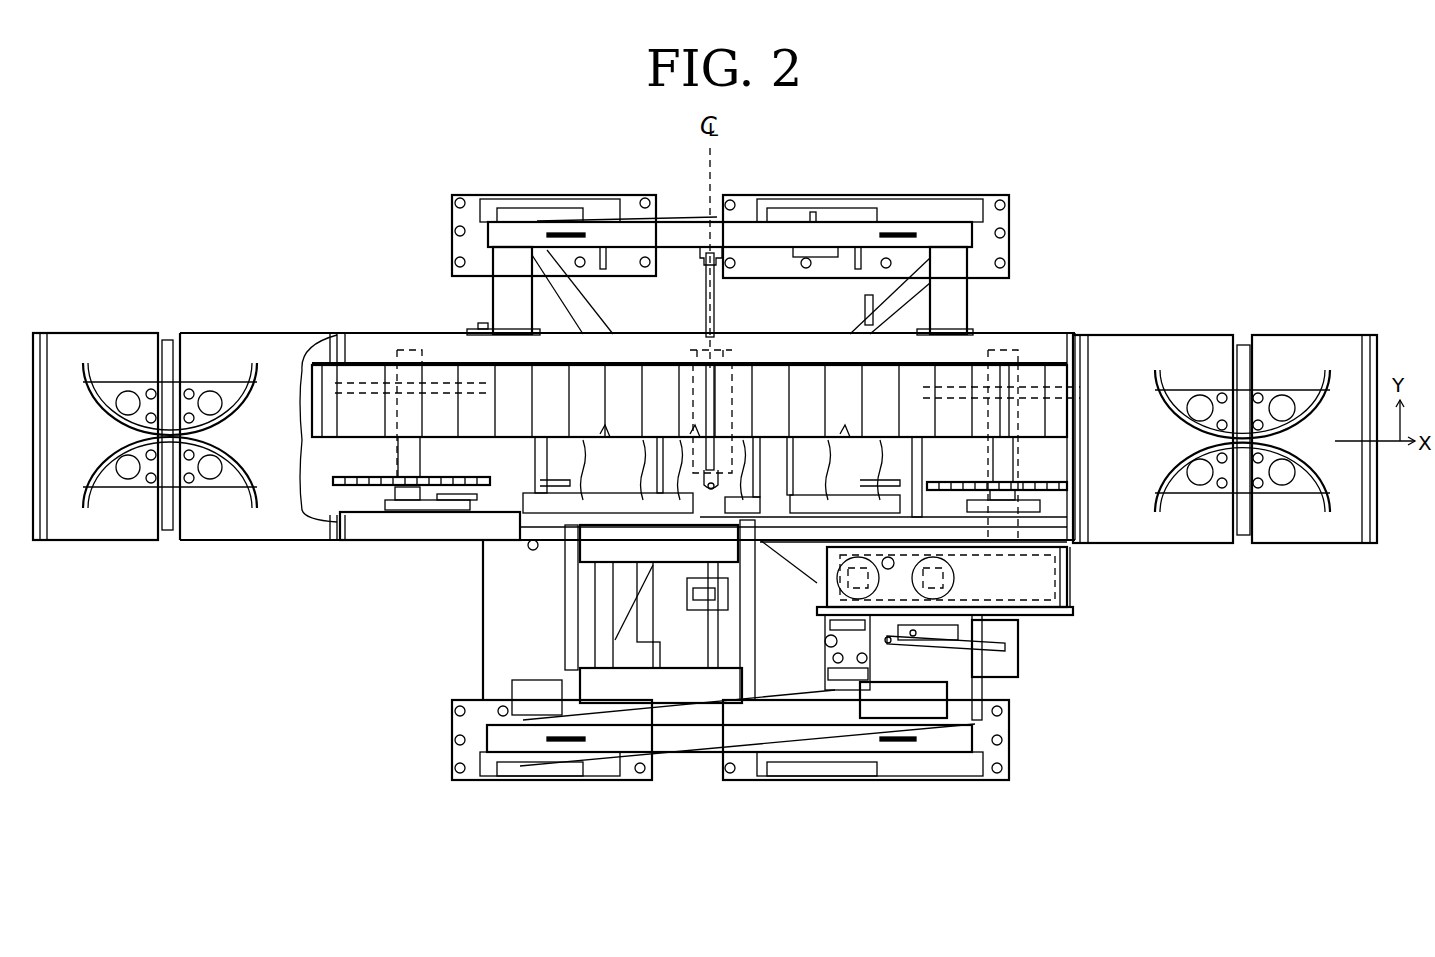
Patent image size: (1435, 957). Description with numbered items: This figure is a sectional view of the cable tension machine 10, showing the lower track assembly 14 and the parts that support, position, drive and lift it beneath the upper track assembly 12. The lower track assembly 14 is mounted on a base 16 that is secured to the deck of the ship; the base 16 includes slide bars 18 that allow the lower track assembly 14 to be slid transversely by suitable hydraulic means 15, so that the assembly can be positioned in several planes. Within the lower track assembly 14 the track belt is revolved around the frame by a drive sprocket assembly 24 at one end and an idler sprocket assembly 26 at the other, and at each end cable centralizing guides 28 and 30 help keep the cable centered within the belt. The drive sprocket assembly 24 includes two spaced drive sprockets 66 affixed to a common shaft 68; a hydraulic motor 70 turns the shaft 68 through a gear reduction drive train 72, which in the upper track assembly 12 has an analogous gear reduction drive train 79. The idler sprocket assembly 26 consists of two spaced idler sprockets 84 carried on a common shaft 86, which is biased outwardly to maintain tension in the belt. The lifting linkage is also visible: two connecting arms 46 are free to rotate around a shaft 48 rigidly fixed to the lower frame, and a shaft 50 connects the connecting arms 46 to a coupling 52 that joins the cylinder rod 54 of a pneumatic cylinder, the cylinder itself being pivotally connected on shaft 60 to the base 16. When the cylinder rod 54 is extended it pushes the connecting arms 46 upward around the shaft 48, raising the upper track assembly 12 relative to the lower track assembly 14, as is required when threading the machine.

The cable tension machine 10 is at (1140, 225).
The upper track assembly 12 is at (977, 355).
The lower track assembly 14 is at (300, 563).
The hydraulic means 15 is at (708, 300).
The base 16 is at (958, 228).
The slide bars 18 is at (508, 290).
The drive sprocket assembly 24 is at (1045, 355).
The idler sprocket assembly 26 is at (400, 347).
The cable centralizing guide 28 is at (1292, 547).
The cable centralizing guide 30 is at (92, 540).
The connecting arms 46 is at (590, 545).
The shaft 48 is at (600, 633).
The shaft 50 is at (722, 625).
The coupling 52 is at (728, 592).
The cylinder rod 54 is at (690, 593).
The shaft 60 is at (533, 545).
The drive sprockets 66 is at (1058, 478).
The shaft 68 is at (1000, 455).
The hydraulic motor 70 is at (842, 693).
The gear reduction drive train 72 is at (1068, 585).
The gear reduction drive train 79 is at (1020, 672).
The idler sprockets 84 is at (465, 480).
The shaft 86 is at (410, 442).